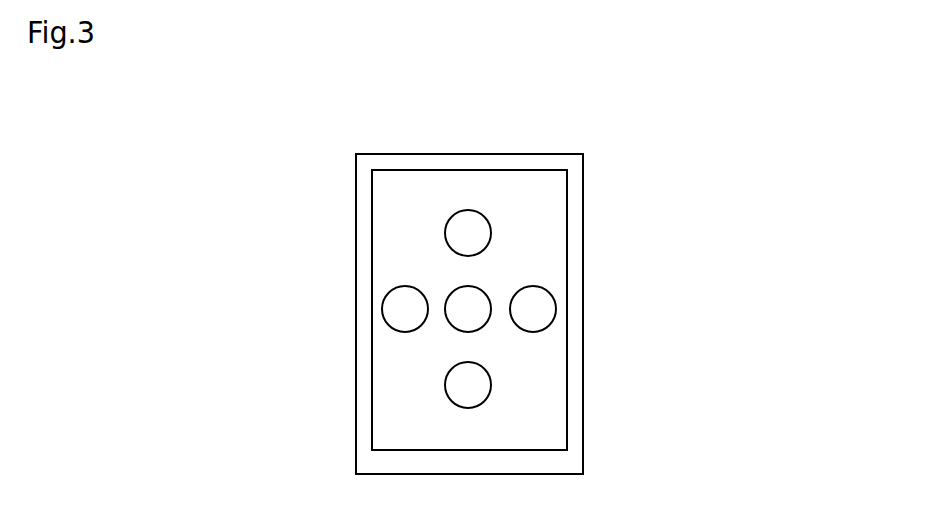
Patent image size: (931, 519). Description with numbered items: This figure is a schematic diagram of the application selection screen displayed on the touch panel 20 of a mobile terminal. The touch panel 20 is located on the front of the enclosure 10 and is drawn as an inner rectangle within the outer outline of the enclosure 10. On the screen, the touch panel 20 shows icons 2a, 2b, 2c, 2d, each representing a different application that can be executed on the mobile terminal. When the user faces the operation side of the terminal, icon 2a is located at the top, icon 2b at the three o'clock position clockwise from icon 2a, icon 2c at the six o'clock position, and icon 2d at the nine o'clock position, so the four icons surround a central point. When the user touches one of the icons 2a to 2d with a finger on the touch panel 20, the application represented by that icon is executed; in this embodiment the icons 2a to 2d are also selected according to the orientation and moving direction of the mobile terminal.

The enclosure 10 is at (575, 178).
The touch panel 20 is at (552, 232).
The icon 2a is at (465, 223).
The icon 2b is at (542, 309).
The icon 2c is at (484, 384).
The icon 2d is at (397, 315).